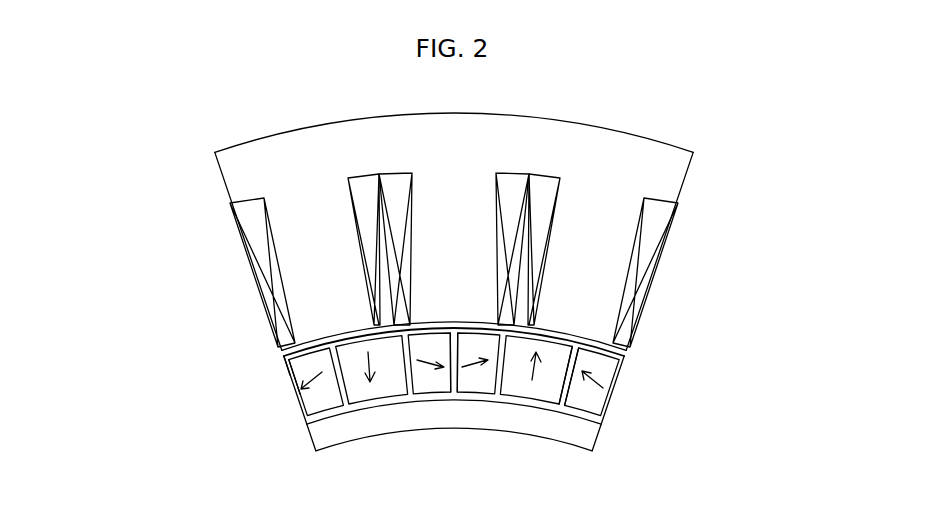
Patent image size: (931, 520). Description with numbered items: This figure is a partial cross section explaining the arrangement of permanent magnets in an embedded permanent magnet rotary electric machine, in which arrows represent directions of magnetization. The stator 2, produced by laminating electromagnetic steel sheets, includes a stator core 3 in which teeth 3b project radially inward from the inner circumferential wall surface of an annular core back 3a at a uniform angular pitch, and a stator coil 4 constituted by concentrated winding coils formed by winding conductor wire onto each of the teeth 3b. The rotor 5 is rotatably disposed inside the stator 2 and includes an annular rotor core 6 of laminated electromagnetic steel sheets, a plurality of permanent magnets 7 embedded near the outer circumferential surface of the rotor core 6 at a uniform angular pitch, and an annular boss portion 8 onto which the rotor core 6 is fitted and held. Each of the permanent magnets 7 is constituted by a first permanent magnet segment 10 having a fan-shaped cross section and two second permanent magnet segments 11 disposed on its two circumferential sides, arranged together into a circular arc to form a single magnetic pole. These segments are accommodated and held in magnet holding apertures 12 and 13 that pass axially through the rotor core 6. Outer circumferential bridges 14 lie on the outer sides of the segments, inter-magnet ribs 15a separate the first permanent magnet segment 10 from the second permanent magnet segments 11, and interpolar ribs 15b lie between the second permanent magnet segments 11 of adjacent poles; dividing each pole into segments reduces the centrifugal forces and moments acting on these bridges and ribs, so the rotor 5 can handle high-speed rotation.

The stator 2 is at (449, 231).
The stator core 3 is at (467, 231).
The core back 3a is at (672, 174).
The teeth 3b is at (613, 252).
The stator coil 4 is at (254, 242).
The rotor 5 is at (451, 416).
The rotor core 6 is at (302, 421).
The permanent magnets 7 is at (454, 426).
The boss portion 8 is at (318, 438).
The first permanent magnet segment 10 is at (381, 399).
The second permanent magnet segments 11 is at (325, 398).
The magnet holding aperture 12 is at (300, 362).
The magnet holding aperture 13 is at (297, 380).
The outer circumferential bridges 14 is at (609, 350).
The inter-magnet ribs 15a is at (573, 360).
The interpolar ribs 15b is at (453, 395).